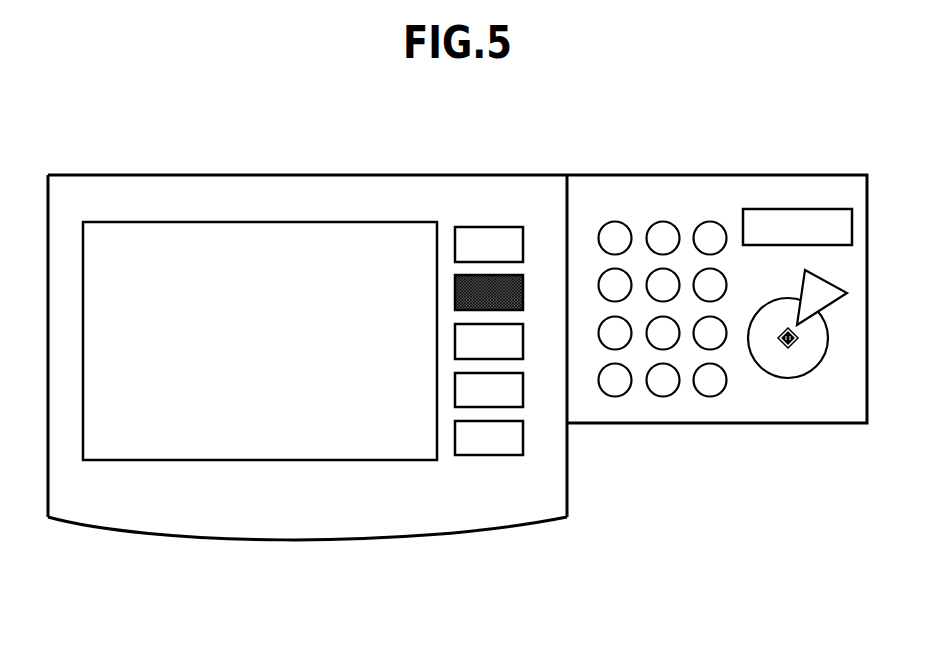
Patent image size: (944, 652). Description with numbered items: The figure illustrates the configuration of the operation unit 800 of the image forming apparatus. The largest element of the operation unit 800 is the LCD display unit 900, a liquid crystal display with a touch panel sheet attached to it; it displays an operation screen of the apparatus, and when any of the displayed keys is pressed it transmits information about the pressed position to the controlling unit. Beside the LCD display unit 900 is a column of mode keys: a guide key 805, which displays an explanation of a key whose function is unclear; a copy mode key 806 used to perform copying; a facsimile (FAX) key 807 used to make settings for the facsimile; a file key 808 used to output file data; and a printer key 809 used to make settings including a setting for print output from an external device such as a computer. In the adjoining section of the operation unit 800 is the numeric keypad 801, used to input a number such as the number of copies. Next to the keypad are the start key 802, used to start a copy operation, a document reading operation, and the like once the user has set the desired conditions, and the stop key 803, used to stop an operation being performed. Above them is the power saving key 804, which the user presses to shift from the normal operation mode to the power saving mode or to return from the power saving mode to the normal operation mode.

The operation unit 800 is at (232, 175).
The LCD display unit 900 is at (275, 460).
The numeric keypad 801 is at (730, 222).
The start key 802 is at (766, 372).
The stop key 803 is at (830, 300).
The power saving key 804 is at (800, 209).
The guide key 805 is at (490, 227).
The copy mode key 806 is at (523, 297).
The facsimile (FAX) key 807 is at (523, 341).
The file key 808 is at (523, 393).
The printer key 809 is at (485, 455).